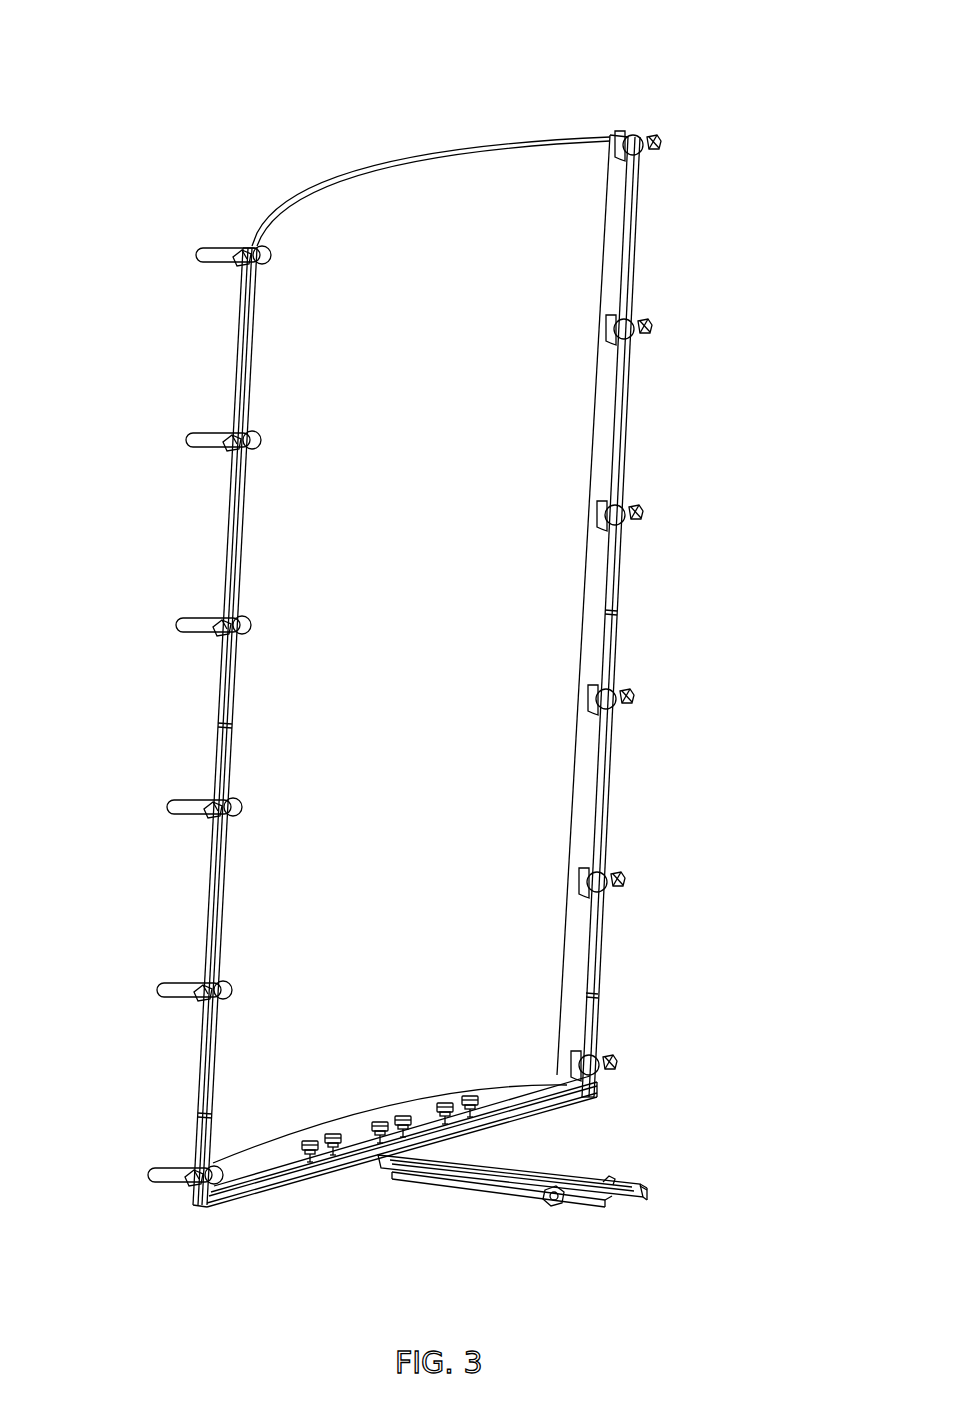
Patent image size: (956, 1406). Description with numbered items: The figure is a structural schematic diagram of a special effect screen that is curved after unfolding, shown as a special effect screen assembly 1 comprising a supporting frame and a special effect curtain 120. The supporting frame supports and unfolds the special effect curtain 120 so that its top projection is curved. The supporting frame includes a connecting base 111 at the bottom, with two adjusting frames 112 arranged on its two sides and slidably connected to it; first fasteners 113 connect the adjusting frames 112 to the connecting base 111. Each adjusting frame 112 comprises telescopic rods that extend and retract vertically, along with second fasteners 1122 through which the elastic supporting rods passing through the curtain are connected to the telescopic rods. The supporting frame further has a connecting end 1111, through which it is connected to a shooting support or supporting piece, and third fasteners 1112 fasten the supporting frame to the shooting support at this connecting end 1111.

The special effect screen assembly 1 is at (377, 61).
The connecting base 111 is at (452, 1183).
The connecting end 1111 is at (668, 1216).
The third fasteners 1112 is at (555, 1208).
The adjusting frames 112 is at (217, 1065).
The second fasteners 1122 is at (217, 635).
The first fasteners 113 is at (470, 1100).
The special effect curtain 120 is at (520, 635).